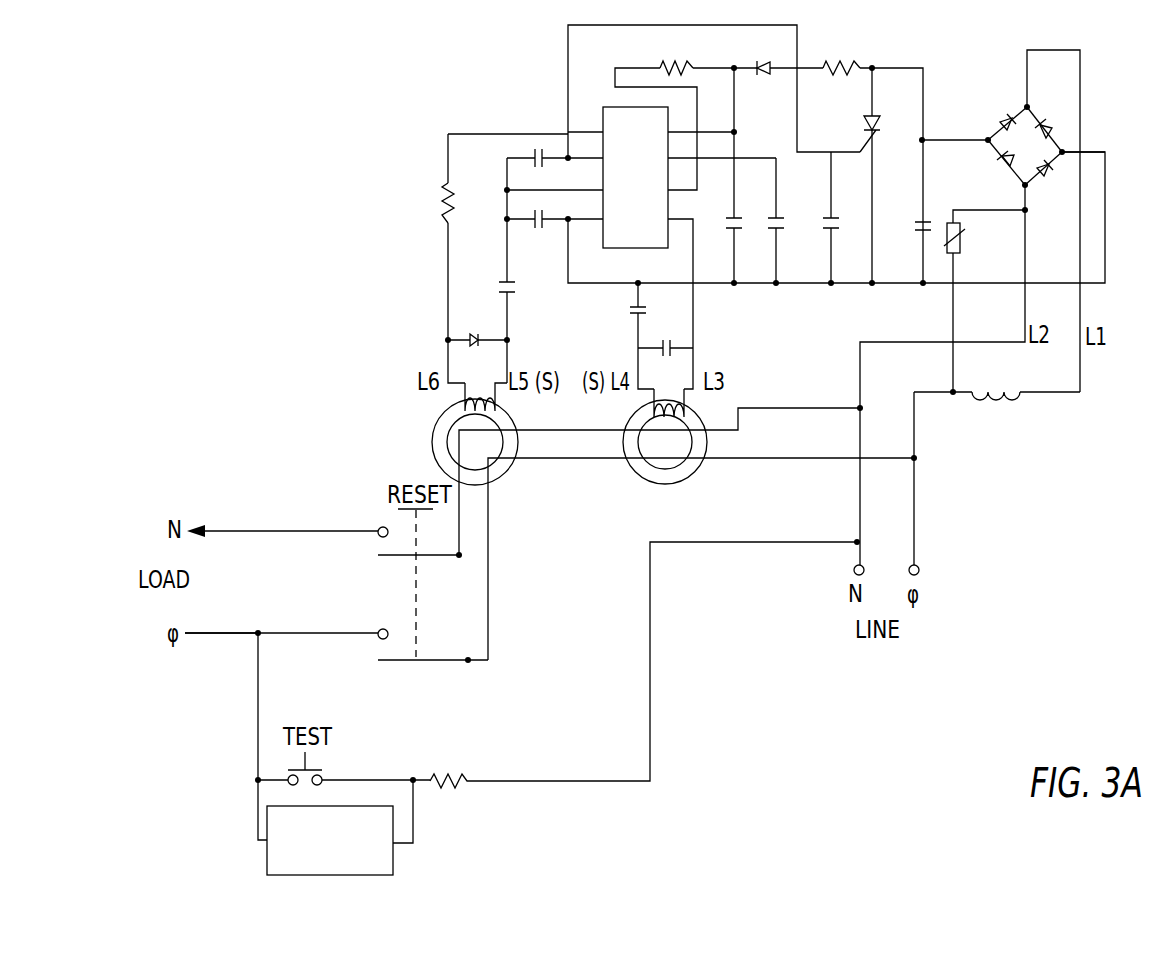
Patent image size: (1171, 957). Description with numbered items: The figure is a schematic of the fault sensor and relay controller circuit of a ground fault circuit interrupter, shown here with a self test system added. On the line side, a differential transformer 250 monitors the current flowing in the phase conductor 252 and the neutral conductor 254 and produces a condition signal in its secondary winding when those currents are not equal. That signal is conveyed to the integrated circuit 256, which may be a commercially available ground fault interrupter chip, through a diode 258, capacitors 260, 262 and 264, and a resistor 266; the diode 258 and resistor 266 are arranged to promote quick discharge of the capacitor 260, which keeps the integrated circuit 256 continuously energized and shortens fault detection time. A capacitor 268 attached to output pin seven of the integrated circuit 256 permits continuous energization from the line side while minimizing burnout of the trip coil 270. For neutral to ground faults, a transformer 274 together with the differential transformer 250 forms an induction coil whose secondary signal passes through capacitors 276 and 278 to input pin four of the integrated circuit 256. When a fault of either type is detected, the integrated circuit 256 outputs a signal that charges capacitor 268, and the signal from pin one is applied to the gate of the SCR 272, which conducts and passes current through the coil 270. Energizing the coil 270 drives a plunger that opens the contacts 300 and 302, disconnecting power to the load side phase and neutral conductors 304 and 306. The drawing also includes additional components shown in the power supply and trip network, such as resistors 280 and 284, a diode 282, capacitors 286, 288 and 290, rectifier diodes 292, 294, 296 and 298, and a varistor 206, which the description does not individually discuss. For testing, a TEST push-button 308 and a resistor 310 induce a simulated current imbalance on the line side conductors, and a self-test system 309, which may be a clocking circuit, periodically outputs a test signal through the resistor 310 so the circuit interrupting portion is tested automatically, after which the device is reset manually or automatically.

The metal oxide varistor 206 is at (966, 243).
The differential transformer 250 is at (503, 477).
The line side phase conductor 252 is at (915, 527).
The line side neutral conductor 254 is at (860, 520).
The integrated circuit 256 is at (607, 106).
The diode 258 is at (474, 338).
The capacitor 260 is at (509, 294).
The capacitor 262 is at (543, 228).
The capacitor 264 is at (539, 162).
The resistor 266 is at (441, 201).
The capacitor 268 is at (779, 216).
The coil 270 is at (990, 391).
The SCR 272 is at (876, 122).
The transformer 274 is at (647, 488).
The capacitor 276 is at (664, 342).
The capacitor 278 is at (628, 310).
The resistor 280 is at (668, 67).
The diode 282 is at (765, 72).
The resistor 284 is at (840, 67).
The capacitor 286 is at (737, 216).
The capacitor 288 is at (833, 216).
The capacitor 290 is at (926, 221).
The bridge rectifier diode 292 is at (1050, 120).
The bridge rectifier diode 294 is at (1008, 116).
The bridge rectifier diode 296 is at (1000, 165).
The bridge rectifier diode 298 is at (1048, 173).
The contact 300 is at (383, 527).
The contact 302 is at (381, 630).
The load side phase conductor 304 is at (215, 632).
The load side neutral conductor 306 is at (222, 530).
The push-button 308 is at (323, 771).
The self-test system 309 is at (394, 852).
The resistor 310 is at (455, 780).